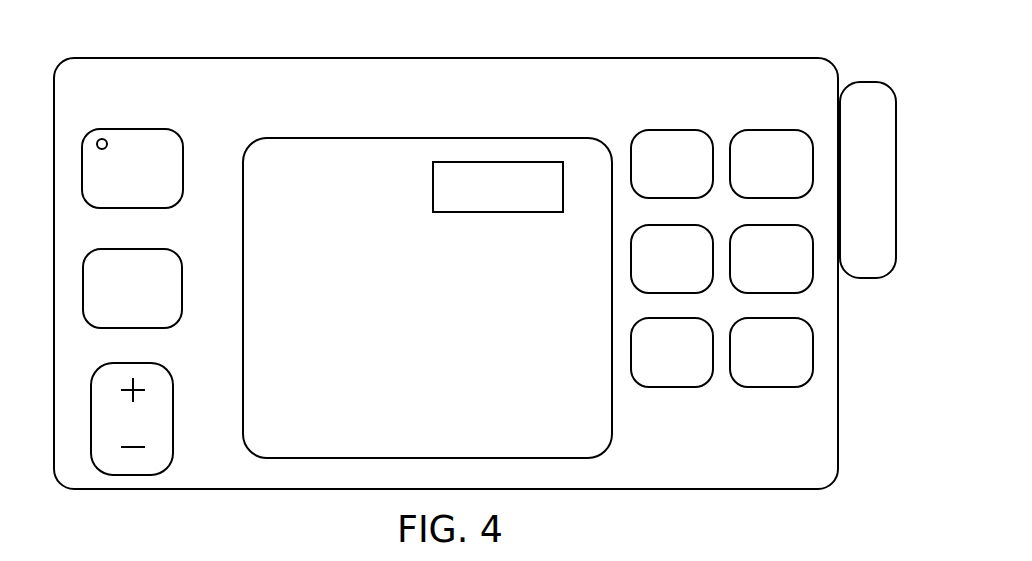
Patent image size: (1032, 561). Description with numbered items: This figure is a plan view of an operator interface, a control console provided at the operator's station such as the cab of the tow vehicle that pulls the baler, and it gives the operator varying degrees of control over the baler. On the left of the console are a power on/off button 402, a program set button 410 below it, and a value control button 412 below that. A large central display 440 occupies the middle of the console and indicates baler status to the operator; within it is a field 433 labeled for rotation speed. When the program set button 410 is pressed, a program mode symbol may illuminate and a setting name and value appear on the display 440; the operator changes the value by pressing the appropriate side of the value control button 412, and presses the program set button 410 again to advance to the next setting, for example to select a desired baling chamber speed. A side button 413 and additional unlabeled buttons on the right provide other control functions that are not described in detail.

The power on/off button 402 is at (183, 136).
The program set button 410 is at (182, 257).
The value control button 412 is at (170, 373).
The central display 440 is at (403, 137).
The RPM display field 433 is at (493, 162).
The side button 413 is at (858, 81).